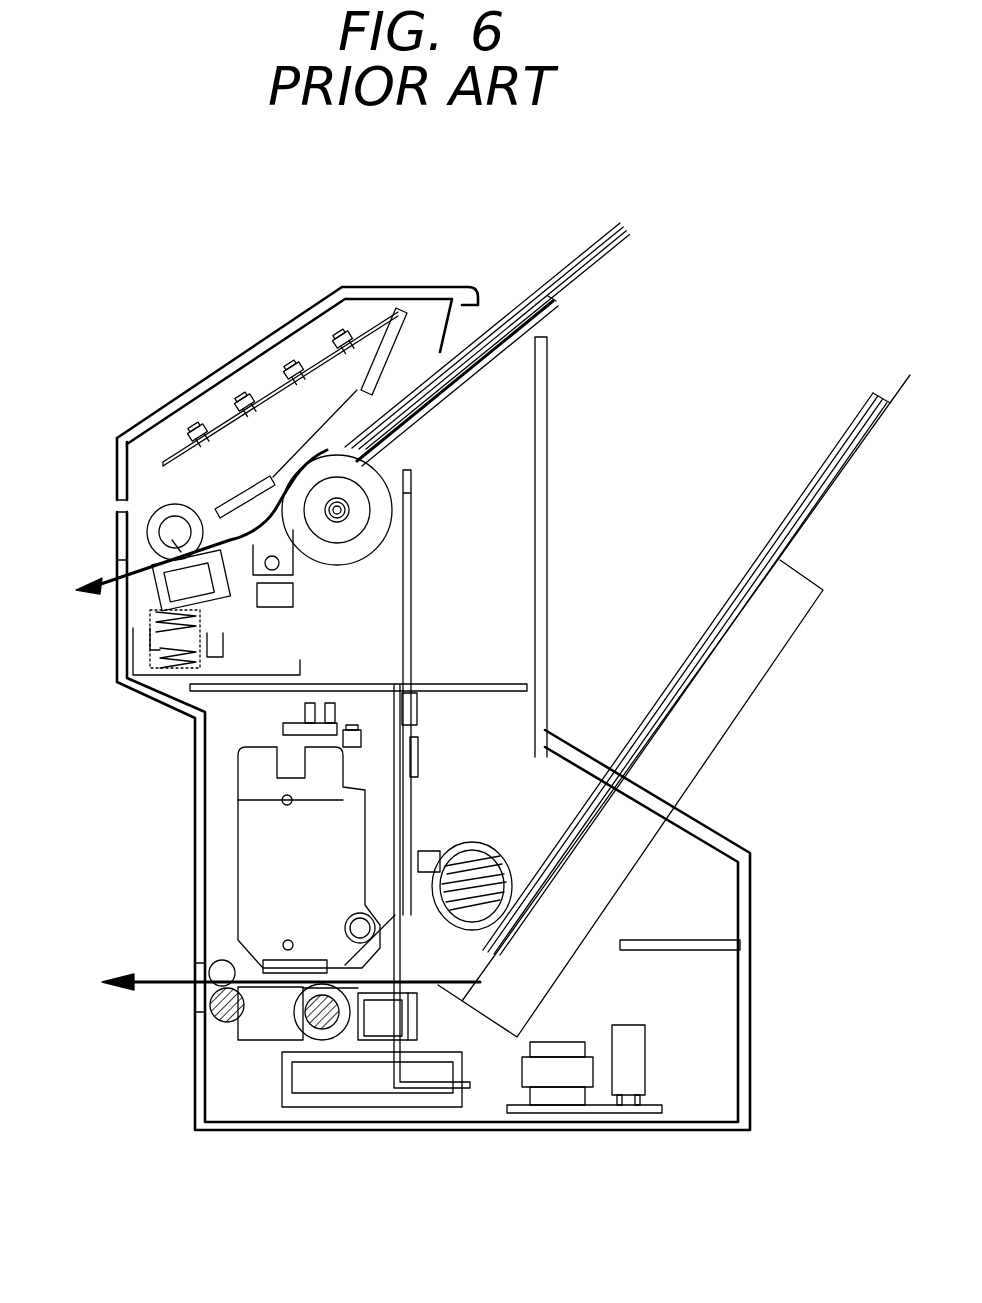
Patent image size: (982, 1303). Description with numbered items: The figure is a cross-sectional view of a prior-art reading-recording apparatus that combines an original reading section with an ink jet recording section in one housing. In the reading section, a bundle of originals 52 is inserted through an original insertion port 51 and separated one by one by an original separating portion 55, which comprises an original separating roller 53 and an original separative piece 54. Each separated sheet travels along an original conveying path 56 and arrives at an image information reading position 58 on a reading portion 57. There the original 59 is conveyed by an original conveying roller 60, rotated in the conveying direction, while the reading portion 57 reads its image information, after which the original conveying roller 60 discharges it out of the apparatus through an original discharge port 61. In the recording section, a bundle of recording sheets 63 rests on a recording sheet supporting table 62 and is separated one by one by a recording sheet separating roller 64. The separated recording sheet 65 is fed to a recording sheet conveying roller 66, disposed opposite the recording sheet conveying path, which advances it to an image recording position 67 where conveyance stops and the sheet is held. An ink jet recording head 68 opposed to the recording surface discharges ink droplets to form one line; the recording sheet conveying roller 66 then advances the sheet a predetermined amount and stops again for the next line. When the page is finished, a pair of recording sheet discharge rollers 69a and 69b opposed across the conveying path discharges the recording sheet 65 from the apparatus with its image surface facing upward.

The original insertion port 51 is at (490, 305).
The originals 52 is at (583, 237).
The original separating roller 53 is at (370, 477).
The original separative piece 54 is at (300, 470).
The original separating portion 55 is at (345, 512).
The original conveying path 56 is at (250, 522).
The reading portion 57 is at (190, 590).
The image information reading position 58 is at (175, 543).
The original 59 is at (168, 507).
The original conveying roller 60 is at (128, 443).
The original discharge port 61 is at (120, 592).
The recording sheet supporting table 62 is at (753, 665).
The recording sheets 63 is at (777, 533).
The recording sheet separating roller 64 is at (492, 843).
The recording sheet 65 is at (427, 1020).
The recording sheet conveying roller 66 is at (320, 1027).
The image recording position 67 is at (285, 990).
The ink jet recording head 68 is at (247, 898).
The recording sheet discharge roller 69a is at (217, 1012).
The recording sheet discharge roller 69b is at (223, 967).